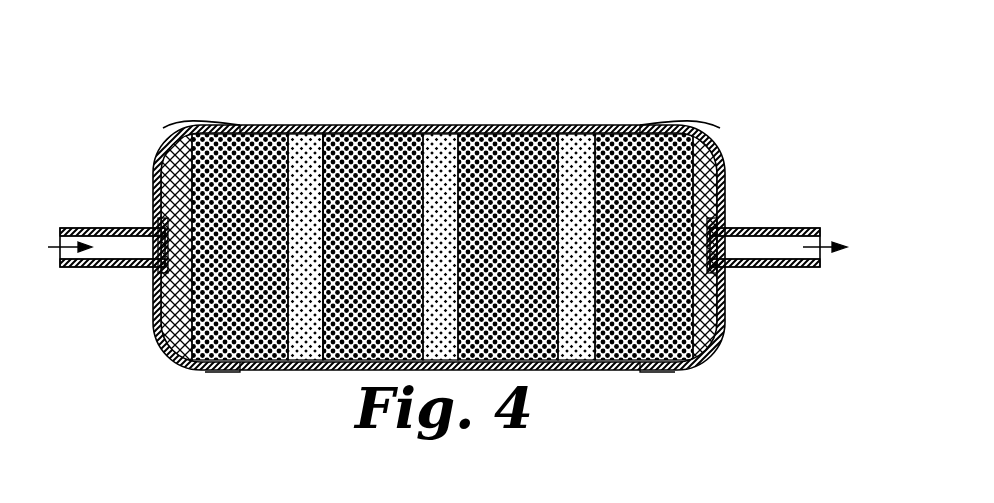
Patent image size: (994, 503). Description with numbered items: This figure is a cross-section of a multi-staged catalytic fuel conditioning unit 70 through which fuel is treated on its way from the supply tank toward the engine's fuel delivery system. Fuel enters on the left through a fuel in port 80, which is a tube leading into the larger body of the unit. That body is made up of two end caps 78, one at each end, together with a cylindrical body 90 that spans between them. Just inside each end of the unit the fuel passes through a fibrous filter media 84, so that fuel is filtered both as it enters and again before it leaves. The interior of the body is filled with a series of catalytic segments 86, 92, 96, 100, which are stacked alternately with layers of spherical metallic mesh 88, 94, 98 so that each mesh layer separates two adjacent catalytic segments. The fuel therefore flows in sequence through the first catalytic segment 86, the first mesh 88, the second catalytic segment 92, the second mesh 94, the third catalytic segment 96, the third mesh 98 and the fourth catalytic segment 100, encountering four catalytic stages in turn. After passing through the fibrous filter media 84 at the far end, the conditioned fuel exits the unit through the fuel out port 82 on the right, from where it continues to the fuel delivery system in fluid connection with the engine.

The catalytic fuel conditioning unit 70 is at (150, 342).
The end cap 78 is at (156, 188).
The fuel in port 80 is at (87, 226).
The fuel out port 82 is at (775, 228).
The fibrous filter media 84 is at (163, 128).
The catalytic segment 86 is at (246, 125).
The spherical metallic mesh 88 is at (314, 125).
The cylindrical body 90 is at (333, 127).
The catalytic segment 92 is at (380, 125).
The spherical metallic mesh 94 is at (448, 125).
The catalytic segment 96 is at (517, 125).
The spherical metallic mesh 98 is at (583, 125).
The catalytic segment 100 is at (640, 125).